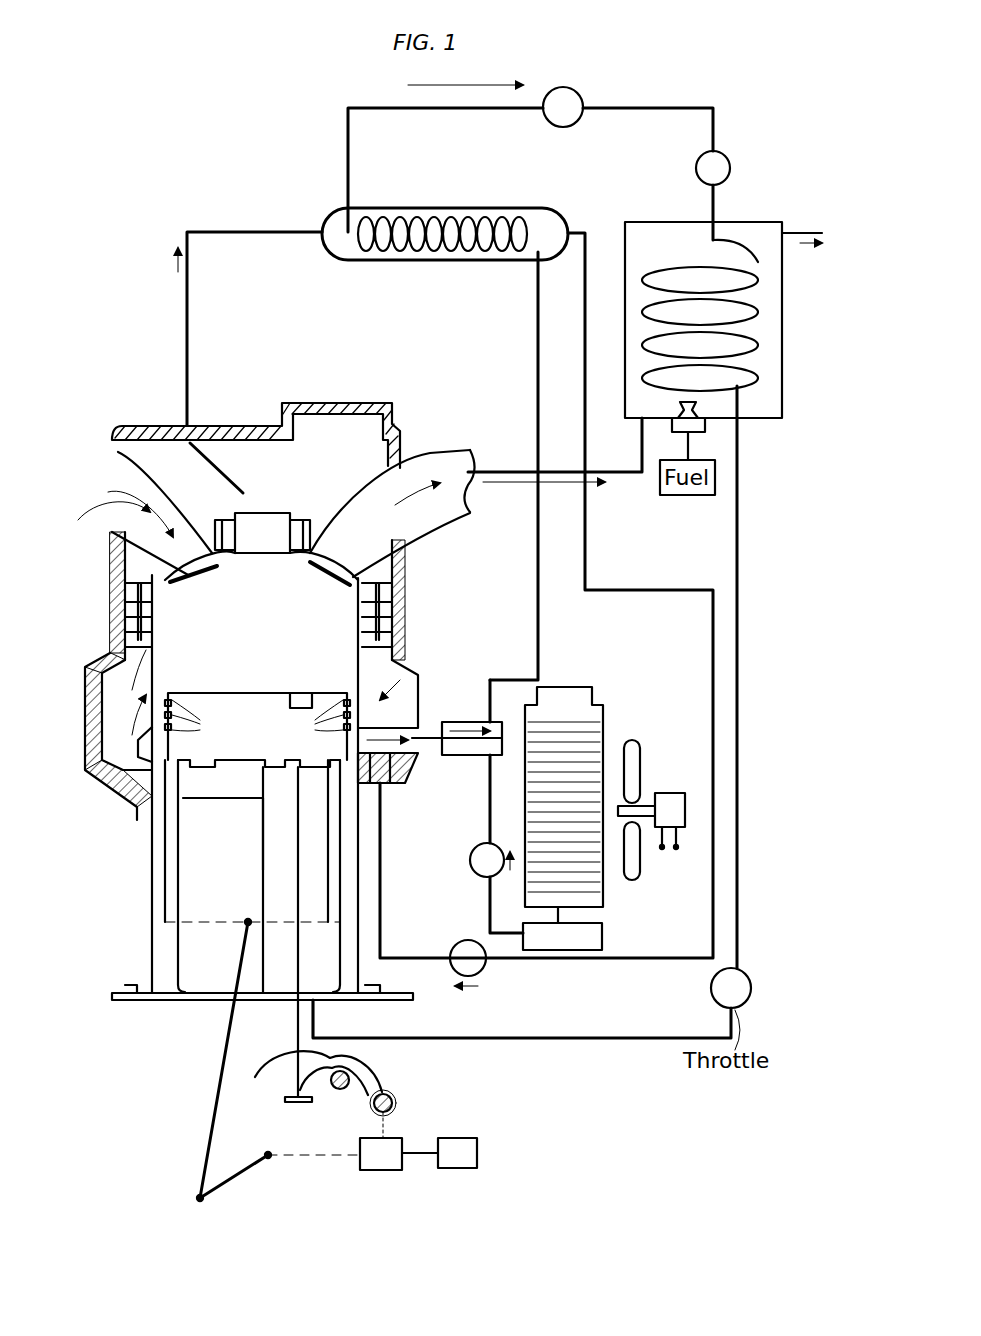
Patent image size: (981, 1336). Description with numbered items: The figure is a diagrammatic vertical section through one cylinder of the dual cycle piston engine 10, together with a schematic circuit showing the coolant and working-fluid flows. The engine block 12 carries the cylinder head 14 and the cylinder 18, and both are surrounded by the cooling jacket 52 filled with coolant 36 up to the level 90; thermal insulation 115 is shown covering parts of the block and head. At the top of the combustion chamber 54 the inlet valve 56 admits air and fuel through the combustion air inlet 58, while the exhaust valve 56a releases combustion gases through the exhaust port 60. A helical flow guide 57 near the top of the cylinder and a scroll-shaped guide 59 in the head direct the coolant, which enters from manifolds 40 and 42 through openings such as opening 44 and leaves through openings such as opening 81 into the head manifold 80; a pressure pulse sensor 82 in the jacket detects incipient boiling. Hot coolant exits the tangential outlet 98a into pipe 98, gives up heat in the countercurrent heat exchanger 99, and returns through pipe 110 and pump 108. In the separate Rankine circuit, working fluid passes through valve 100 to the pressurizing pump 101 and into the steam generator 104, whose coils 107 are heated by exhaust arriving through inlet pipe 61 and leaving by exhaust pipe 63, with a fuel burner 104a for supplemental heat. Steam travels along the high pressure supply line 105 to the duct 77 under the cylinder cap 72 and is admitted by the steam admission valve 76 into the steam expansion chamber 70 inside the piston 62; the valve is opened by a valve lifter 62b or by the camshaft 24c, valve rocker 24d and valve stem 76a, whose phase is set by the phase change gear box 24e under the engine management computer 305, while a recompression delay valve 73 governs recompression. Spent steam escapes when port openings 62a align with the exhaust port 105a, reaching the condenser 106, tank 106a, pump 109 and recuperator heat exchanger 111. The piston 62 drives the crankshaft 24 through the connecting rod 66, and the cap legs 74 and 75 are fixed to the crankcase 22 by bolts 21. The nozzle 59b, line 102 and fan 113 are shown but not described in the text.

The internal combustion dual cycle piston engine 10 is at (108, 418).
The engine block 12 is at (108, 600).
The cylinder head 14 is at (135, 432).
The cylinder 18 is at (157, 673).
The bolts 21 is at (120, 992).
The crankcase 22 is at (405, 995).
The crankshaft 24 is at (232, 1176).
The cam and camshaft 24c is at (372, 1110).
The valve rocker 24d is at (273, 1092).
The phase change gear box 24e is at (380, 1172).
The coolant 36 is at (165, 470).
The manifold 40 is at (97, 782).
The manifold 42 is at (418, 720).
The opening 44 is at (392, 682).
The cooling jacket 52 is at (118, 455).
The combustion chamber 54 is at (258, 634).
The inlet valve 56 is at (205, 570).
The exhaust valve 56a is at (330, 572).
The helical flow guide 57 is at (112, 593).
The combustion air inlet 58 is at (97, 523).
The scroll-shaped guide 59 is at (280, 513).
The injector nozzle 59b is at (200, 590).
The exhaust port 60 is at (465, 512).
The inlet pipe 61 is at (620, 480).
The piston 62 is at (225, 695).
The port openings 62a is at (165, 880).
The valve lifter 62b is at (306, 690).
The exhaust pipe 63 is at (800, 230).
The connecting rod 66 is at (215, 1112).
The steam expansion chamber 70 is at (262, 749).
The cylinder cap 72 is at (165, 800).
The steam recompression delay valve 73 is at (190, 828).
The leg 74 is at (175, 958).
The leg 75 is at (340, 990).
The steam admission valve 76 is at (270, 808).
The valve stem 76a is at (298, 852).
The duct 77 is at (270, 866).
The coolant manifold 80 is at (345, 400).
The opening 81 is at (305, 420).
The pressure pulse sensor 82 is at (380, 456).
The coolant fill level 90 is at (175, 443).
The pipe 98 is at (285, 232).
The outlet 98a is at (243, 493).
The countercurrent heat exchanger 99 is at (435, 210).
The valve 100 is at (580, 93).
The pressurizing pump 101 is at (725, 155).
The conduit 102 is at (536, 292).
The steam generator 104 is at (783, 300).
The fuel burner 104a is at (700, 425).
The high pressure steam supply line 105 is at (742, 472).
The exhaust port 105a is at (420, 715).
The condenser 106 is at (590, 700).
The tank 106a is at (580, 945).
The coils 107 is at (760, 380).
The pump 108 is at (485, 975).
The pump 109 is at (470, 866).
The pipe 110 is at (588, 575).
The counter current heat exchanger 111 is at (495, 722).
The fan 113 is at (640, 775).
The thermal insulation 115 is at (398, 420).
The electronic engine management computer 305 is at (477, 1153).